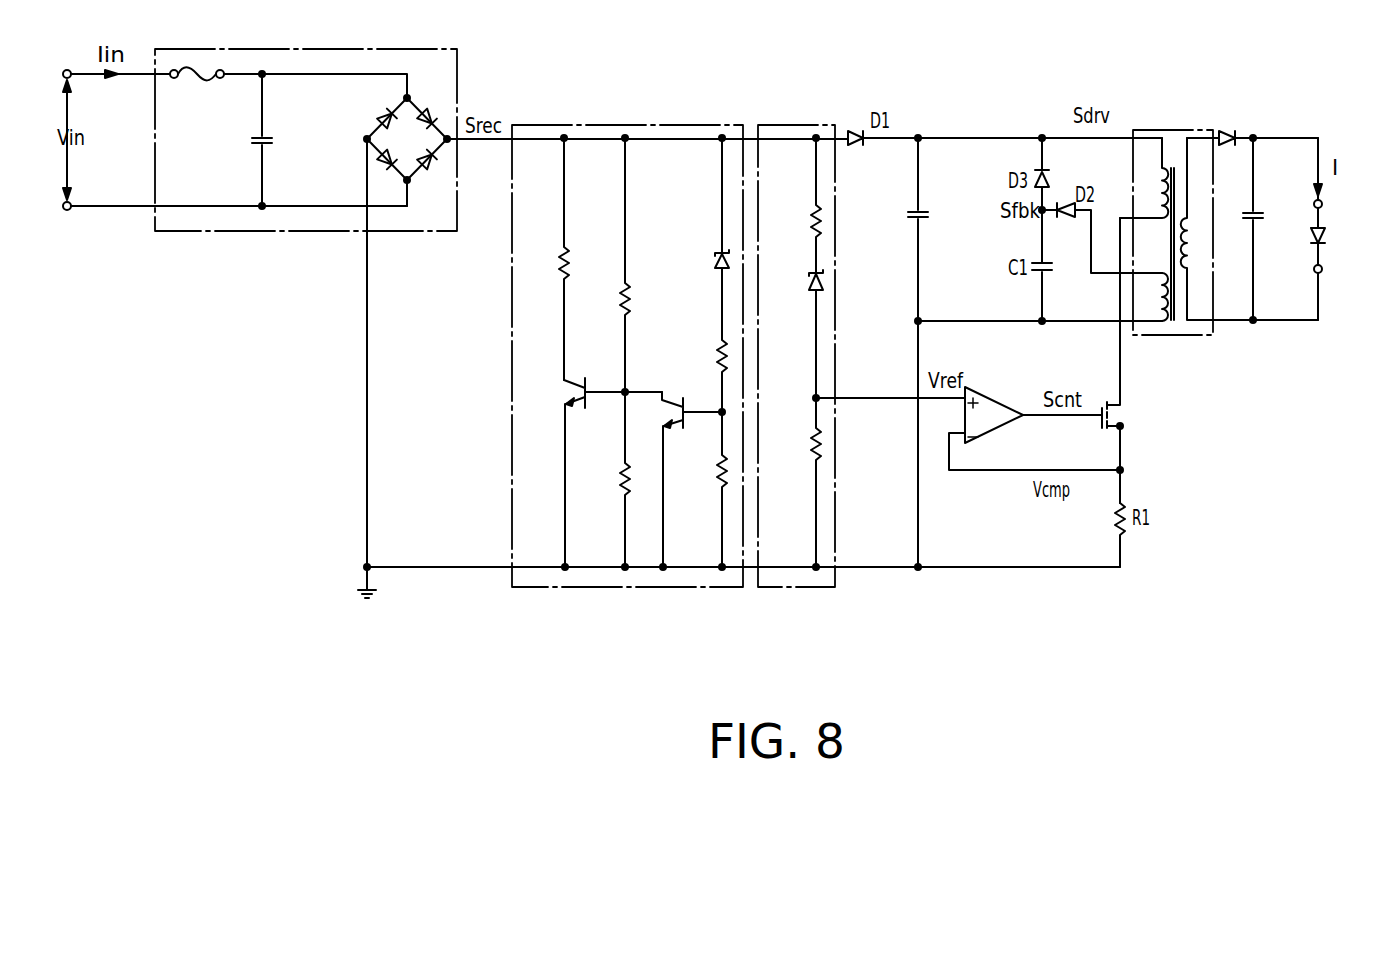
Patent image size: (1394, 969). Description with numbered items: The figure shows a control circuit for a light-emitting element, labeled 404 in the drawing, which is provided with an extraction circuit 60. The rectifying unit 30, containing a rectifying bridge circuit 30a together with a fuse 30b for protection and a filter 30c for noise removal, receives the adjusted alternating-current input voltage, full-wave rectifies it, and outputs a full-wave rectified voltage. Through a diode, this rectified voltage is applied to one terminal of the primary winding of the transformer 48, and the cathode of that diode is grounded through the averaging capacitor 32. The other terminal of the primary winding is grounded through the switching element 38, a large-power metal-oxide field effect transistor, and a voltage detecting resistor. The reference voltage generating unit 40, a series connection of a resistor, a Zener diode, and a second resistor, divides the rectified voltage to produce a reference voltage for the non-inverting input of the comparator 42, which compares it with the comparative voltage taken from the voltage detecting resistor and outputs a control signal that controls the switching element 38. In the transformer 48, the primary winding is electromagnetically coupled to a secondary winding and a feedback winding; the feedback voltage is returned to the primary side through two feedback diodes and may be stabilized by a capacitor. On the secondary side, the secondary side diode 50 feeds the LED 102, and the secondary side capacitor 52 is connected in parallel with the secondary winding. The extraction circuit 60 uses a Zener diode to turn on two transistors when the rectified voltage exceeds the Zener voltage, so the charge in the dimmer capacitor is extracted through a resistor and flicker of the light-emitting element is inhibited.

The rectifying unit 30 is at (225, 232).
The rectifying bridge circuit 30a is at (412, 100).
The fuse 30b is at (200, 83).
The filter 30c is at (275, 141).
The extraction circuit 60 is at (705, 123).
The reference voltage generating unit 40 is at (828, 123).
The averaging capacitor 32 is at (920, 203).
The comparator 42 is at (987, 394).
The switching element 38 is at (1127, 420).
The transformer 48 is at (1190, 328).
The secondary side diode 50 is at (1228, 128).
The secondary side capacitor 52 is at (1257, 205).
The LED 102 is at (1333, 240).
The power supply circuit 404 is at (617, 680).